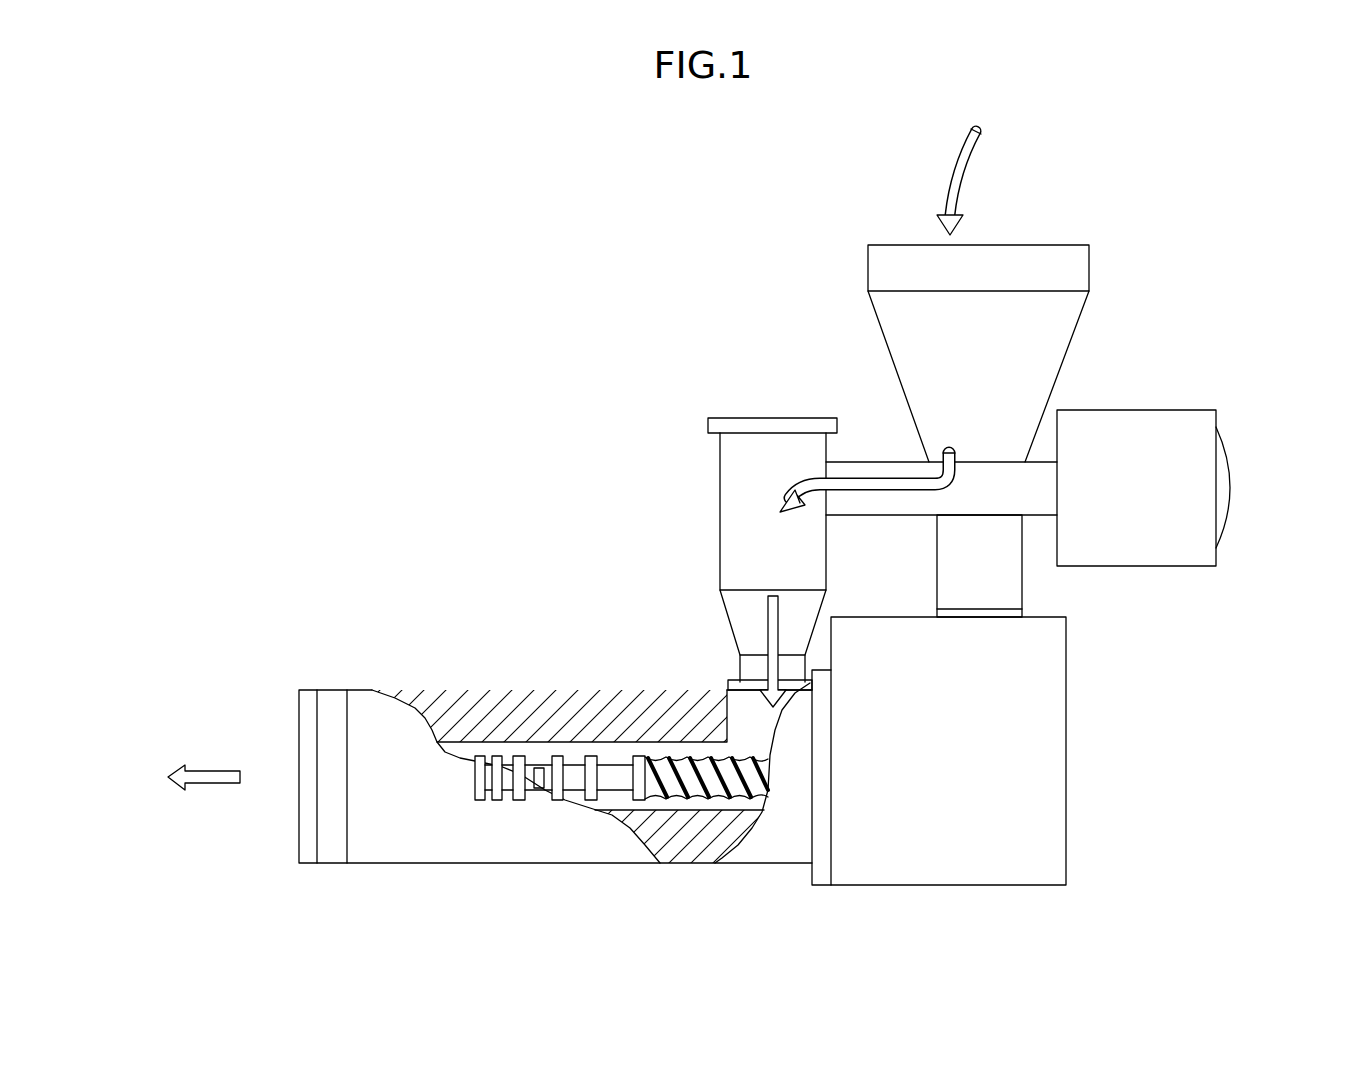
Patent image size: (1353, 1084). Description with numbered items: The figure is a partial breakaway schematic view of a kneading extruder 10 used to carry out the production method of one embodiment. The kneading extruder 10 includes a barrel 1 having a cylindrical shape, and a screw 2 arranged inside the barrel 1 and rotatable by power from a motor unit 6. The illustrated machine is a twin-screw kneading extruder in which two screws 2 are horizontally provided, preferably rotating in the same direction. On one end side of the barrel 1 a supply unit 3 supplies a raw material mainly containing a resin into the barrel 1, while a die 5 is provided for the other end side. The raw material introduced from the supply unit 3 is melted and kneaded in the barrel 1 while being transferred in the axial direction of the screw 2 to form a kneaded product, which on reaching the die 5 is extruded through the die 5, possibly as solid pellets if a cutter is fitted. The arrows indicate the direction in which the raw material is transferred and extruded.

The barrel 1 is at (492, 690).
The screw 2 is at (657, 752).
The supply unit 3 is at (830, 295).
The die 5 is at (309, 776).
The motor unit 6 is at (945, 885).
The kneading extruder 10 is at (1112, 178).